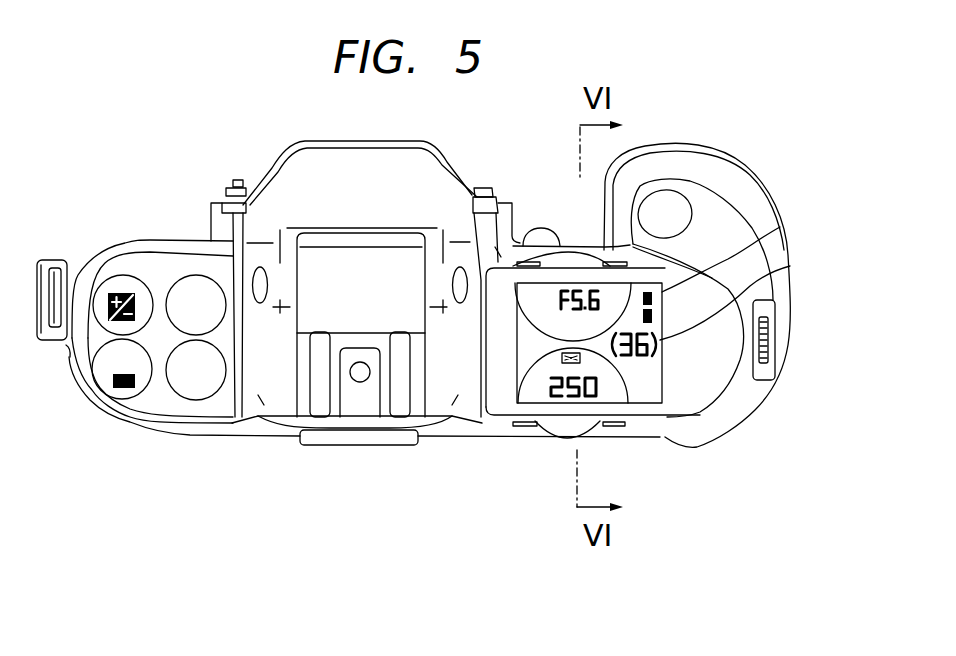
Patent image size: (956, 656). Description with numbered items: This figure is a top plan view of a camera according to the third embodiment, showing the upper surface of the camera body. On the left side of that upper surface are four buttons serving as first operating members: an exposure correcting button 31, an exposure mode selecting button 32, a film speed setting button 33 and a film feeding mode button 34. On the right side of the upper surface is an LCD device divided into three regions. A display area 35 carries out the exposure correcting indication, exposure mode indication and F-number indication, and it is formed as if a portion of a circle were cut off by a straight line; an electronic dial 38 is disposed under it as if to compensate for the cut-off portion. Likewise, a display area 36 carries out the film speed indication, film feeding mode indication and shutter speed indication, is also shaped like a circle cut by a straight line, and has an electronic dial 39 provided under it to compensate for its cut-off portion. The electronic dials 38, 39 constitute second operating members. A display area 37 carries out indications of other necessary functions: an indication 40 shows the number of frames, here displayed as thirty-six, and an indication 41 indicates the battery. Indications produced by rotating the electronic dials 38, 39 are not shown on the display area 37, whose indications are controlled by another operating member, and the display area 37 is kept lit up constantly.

The exposure correcting button 31 is at (104, 286).
The exposure mode selecting button 32 is at (187, 285).
The film speed setting button 33 is at (113, 395).
The film feeding mode button 34 is at (177, 394).
The display area 35 is at (513, 238).
The display area 36 is at (530, 388).
The display area 37 is at (653, 400).
The electronic dial 38 is at (580, 257).
The electronic dial 39 is at (583, 440).
The indication 40 is at (790, 266).
The indication 41 is at (780, 227).